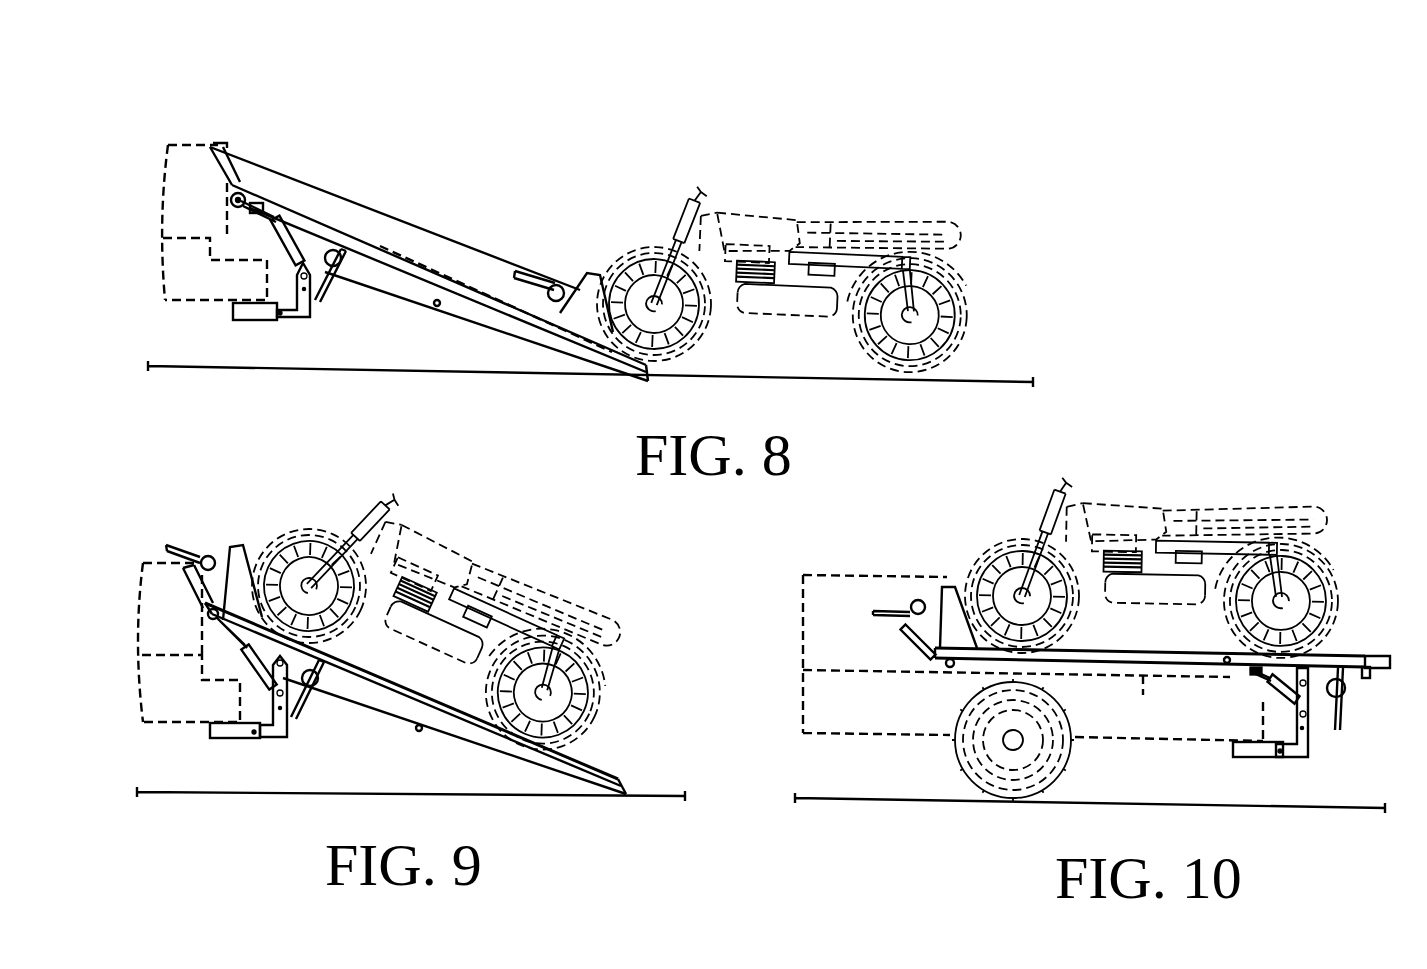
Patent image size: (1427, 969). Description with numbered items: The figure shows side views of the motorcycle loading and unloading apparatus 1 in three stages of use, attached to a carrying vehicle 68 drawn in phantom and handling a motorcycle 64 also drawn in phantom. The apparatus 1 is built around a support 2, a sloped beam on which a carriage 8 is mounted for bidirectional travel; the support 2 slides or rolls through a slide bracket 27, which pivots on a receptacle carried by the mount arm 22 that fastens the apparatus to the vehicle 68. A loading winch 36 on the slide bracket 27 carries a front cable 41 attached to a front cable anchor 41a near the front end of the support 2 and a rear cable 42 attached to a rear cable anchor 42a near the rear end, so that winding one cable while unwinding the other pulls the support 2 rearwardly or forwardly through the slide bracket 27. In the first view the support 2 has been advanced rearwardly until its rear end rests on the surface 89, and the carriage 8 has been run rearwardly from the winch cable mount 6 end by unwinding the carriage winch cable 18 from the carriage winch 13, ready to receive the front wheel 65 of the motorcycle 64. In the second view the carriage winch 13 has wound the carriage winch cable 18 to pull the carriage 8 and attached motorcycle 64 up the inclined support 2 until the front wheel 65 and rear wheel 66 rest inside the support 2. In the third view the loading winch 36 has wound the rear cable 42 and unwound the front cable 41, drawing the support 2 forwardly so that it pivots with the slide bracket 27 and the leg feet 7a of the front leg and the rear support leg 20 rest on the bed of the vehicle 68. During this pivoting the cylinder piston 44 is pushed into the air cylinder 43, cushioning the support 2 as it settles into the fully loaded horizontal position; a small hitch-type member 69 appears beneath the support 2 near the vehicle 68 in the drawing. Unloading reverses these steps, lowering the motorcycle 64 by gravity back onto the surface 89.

In FIG. 8, the motorcycle loading and unloading apparatus 1 is at (380, 175).
In FIG. 9, the motorcycle loading and unloading apparatus 1 is at (283, 470).
In FIG. 10, the motorcycle loading and unloading apparatus 1 is at (937, 507).
In FIG. 8, the support 2 is at (643, 377).
In FIG. 9, the support 2 is at (598, 757).
In FIG. 10, the support 2 is at (1380, 648).
In FIG. 8, the winch cable mount 6 is at (227, 177).
In FIG. 9, the winch cable mount 6 is at (205, 603).
In FIG. 10, the winch cable mount 6 is at (933, 633).
In FIG. 10, the leg feet 7a is at (950, 668).
In FIG. 8, the carriage 8 is at (597, 273).
In FIG. 9, the carriage 8 is at (250, 547).
In FIG. 10, the carriage 8 is at (957, 582).
In FIG. 8, the carriage winch 13 is at (570, 273).
In FIG. 9, the carriage winch 13 is at (218, 547).
In FIG. 10, the carriage winch 13 is at (923, 600).
In FIG. 8, the carriage winch cable 18 is at (477, 250).
In FIG. 10, the rear support leg 20 is at (1227, 657).
In FIG. 8, the mount arm 22 is at (300, 320).
In FIG. 9, the mount arm 22 is at (279, 740).
In FIG. 10, the mount arm 22 is at (1300, 760).
In FIG. 8, the slide bracket 27 is at (313, 207).
In FIG. 9, the slide bracket 27 is at (340, 648).
In FIG. 10, the slide bracket 27 is at (1343, 640).
In FIG. 8, the loading winch 36 is at (357, 263).
In FIG. 9, the loading winch 36 is at (343, 677).
In FIG. 10, the loading winch 36 is at (1353, 695).
In FIG. 8, the front cable 41 is at (353, 265).
In FIG. 9, the front cable 41 is at (411, 691).
In FIG. 10, the front cable 41 is at (1143, 685).
In FIG. 8, the front cable anchor 41a is at (613, 372).
In FIG. 9, the front cable anchor 41a is at (592, 787).
In FIG. 8, the rear cable 42 is at (437, 303).
In FIG. 9, the rear cable 42 is at (419, 728).
In FIG. 10, the rear cable 42 is at (1372, 674).
In FIG. 8, the rear cable anchor 42a is at (257, 210).
In FIG. 9, the rear cable anchor 42a is at (210, 617).
In FIG. 10, the rear cable anchor 42a is at (943, 663).
In FIG. 8, the air cylinder 43 is at (280, 247).
In FIG. 9, the air cylinder 43 is at (247, 677).
In FIG. 10, the air cylinder 43 is at (1263, 702).
In FIG. 8, the cylinder piston 44 is at (257, 223).
In FIG. 9, the cylinder piston 44 is at (260, 660).
In FIG. 10, the cylinder piston 44 is at (1267, 677).
In FIG. 8, the motorcycle 64 is at (815, 252).
In FIG. 9, the motorcycle 64 is at (477, 619).
In FIG. 10, the motorcycle 64 is at (1153, 532).
In FIG. 8, the front wheel 65 is at (707, 340).
In FIG. 9, the front wheel 65 is at (317, 523).
In FIG. 10, the front wheel 65 is at (1007, 540).
In FIG. 8, the rear wheel 66 is at (953, 273).
In FIG. 9, the rear wheel 66 is at (600, 677).
In FIG. 10, the rear wheel 66 is at (1307, 547).
In FIG. 8, the carrying vehicle 68 is at (178, 140).
In FIG. 9, the carrying vehicle 68 is at (147, 557).
In FIG. 10, the carrying vehicle 68 is at (867, 573).
In FIG. 8, the hitch receiver 69 is at (257, 313).
In FIG. 9, the hitch receiver 69 is at (237, 733).
In FIG. 10, the hitch receiver 69 is at (1243, 757).
In FIG. 8, the surface 89 is at (993, 378).
In FIG. 9, the surface 89 is at (670, 793).
In FIG. 10, the surface 89 is at (870, 797).